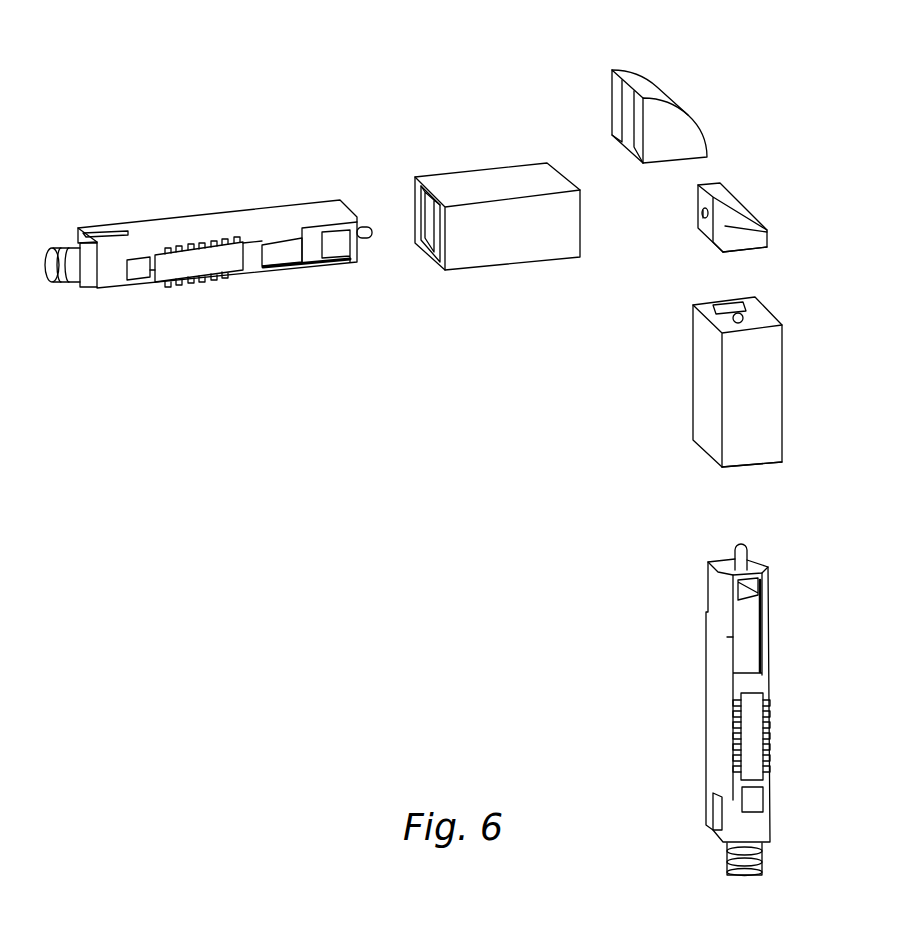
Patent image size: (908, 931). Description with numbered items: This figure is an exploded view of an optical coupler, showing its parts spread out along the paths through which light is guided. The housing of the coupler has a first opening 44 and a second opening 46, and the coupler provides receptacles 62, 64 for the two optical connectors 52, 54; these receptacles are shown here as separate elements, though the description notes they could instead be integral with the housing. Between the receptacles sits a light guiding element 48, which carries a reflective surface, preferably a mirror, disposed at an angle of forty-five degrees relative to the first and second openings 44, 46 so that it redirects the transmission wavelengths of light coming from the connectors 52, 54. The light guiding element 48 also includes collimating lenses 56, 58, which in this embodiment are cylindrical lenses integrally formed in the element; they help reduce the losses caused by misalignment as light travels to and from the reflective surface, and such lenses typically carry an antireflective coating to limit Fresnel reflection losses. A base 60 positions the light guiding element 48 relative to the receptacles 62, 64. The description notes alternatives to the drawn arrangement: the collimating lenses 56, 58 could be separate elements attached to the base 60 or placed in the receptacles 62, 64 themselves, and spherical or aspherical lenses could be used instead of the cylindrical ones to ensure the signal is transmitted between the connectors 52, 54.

The first opening 44 is at (422, 252).
The second opening 46 is at (758, 468).
The light guiding element 48 is at (754, 210).
The connector 52 is at (242, 208).
The connector 54 is at (772, 635).
The collimating lens 56 is at (703, 232).
The collimating lens 58 is at (740, 257).
The base 60 is at (653, 85).
The receptacle 62 is at (497, 221).
The receptacle 64 is at (785, 397).